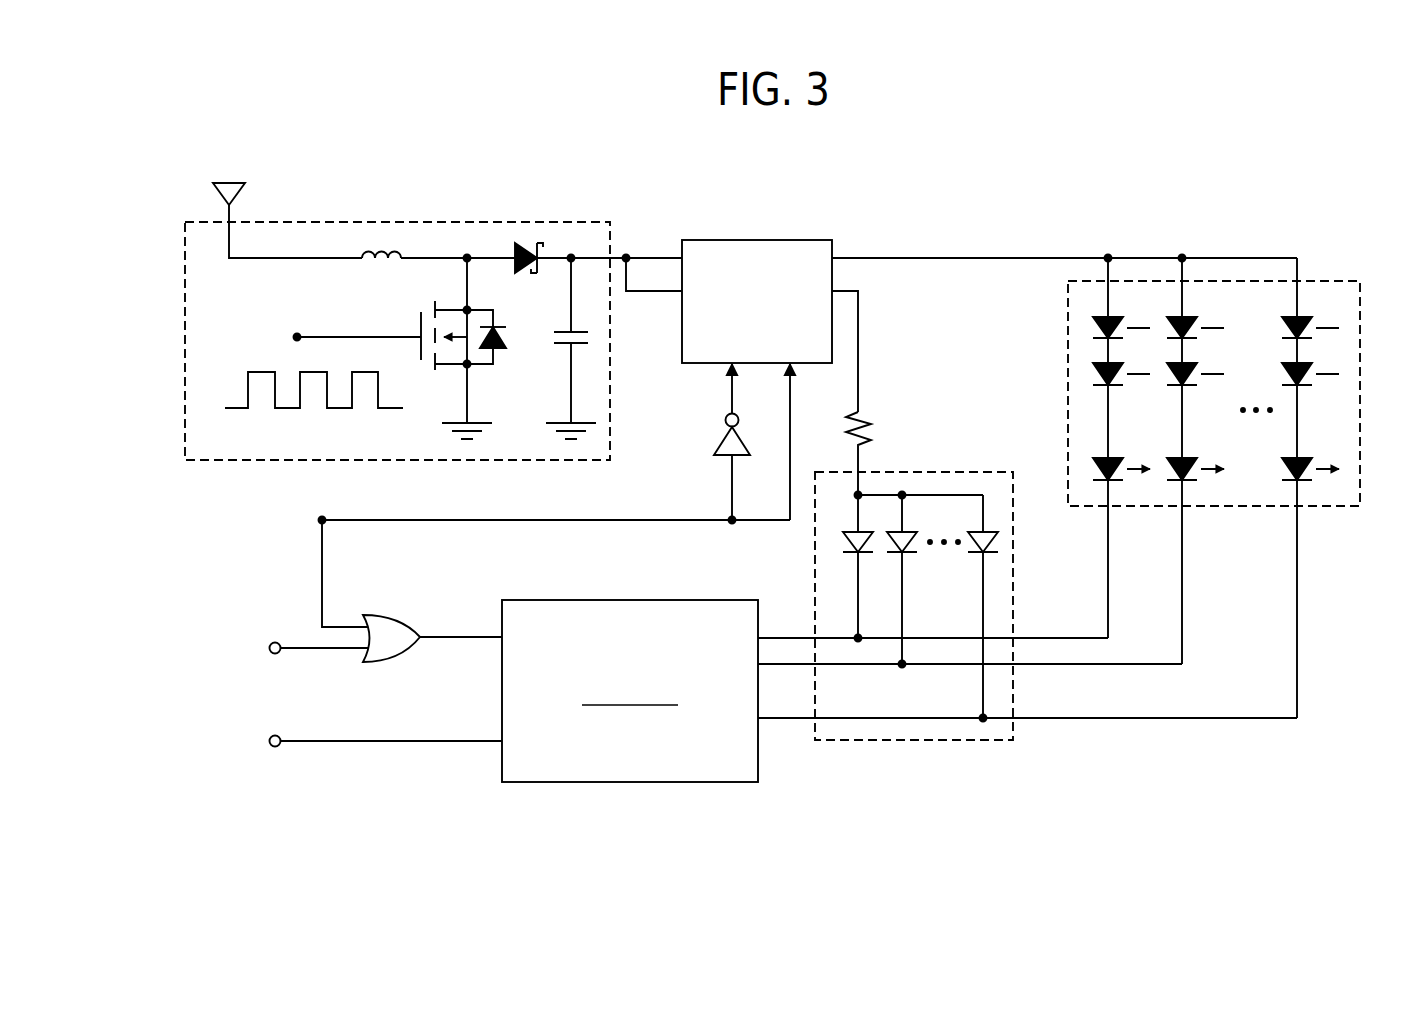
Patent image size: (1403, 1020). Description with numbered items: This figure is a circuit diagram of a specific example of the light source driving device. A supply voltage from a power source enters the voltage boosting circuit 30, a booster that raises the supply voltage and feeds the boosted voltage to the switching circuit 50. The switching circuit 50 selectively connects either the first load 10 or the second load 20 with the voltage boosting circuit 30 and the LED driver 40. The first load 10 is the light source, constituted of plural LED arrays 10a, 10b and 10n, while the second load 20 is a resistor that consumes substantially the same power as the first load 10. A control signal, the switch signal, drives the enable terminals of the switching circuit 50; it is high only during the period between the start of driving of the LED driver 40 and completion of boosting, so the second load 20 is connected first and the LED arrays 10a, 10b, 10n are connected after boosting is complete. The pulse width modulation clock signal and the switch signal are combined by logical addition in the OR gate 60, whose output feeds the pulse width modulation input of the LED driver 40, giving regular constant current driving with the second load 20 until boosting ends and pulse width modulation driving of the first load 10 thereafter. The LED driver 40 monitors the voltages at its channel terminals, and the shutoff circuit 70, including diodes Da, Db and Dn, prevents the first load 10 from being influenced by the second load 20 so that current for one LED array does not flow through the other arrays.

The first load 10 is at (1330, 281).
The LED array 10a is at (1120, 493).
The LED array 10b is at (1194, 493).
The LED array 10n is at (1309, 493).
The second load 20 is at (863, 412).
The voltage boosting circuit 30 is at (573, 222).
The LED driver 40 is at (728, 600).
The switching circuit 50 is at (803, 240).
The OR gate 60 is at (403, 617).
The shutoff circuit 70 is at (980, 472).